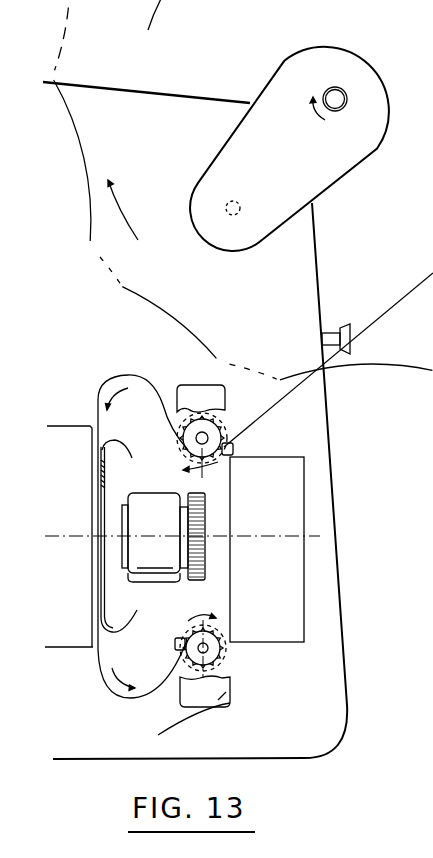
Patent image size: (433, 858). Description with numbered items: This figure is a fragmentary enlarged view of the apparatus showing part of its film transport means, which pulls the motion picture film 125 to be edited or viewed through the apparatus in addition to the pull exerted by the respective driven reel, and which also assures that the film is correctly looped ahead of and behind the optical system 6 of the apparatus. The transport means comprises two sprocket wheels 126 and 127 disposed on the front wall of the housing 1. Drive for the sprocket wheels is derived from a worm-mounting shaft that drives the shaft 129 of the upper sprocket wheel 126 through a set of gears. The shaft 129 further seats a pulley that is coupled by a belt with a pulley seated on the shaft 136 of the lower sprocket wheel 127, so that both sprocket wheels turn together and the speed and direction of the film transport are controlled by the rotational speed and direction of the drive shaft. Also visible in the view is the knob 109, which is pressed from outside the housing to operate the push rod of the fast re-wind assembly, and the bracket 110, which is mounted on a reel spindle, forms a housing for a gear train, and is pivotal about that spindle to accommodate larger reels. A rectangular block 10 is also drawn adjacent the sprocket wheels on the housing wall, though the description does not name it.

The housing 1 is at (340, 550).
The optical system 6 is at (150, 600).
The support block 10 is at (298, 605).
The knob 109 is at (350, 350).
The bracket 110 is at (363, 152).
The motion picture film 125 is at (295, 389).
The sprocket wheel 126 is at (210, 433).
The sprocket wheel 127 is at (197, 655).
The shaft 129 is at (202, 432).
The shaft 136 is at (208, 650).